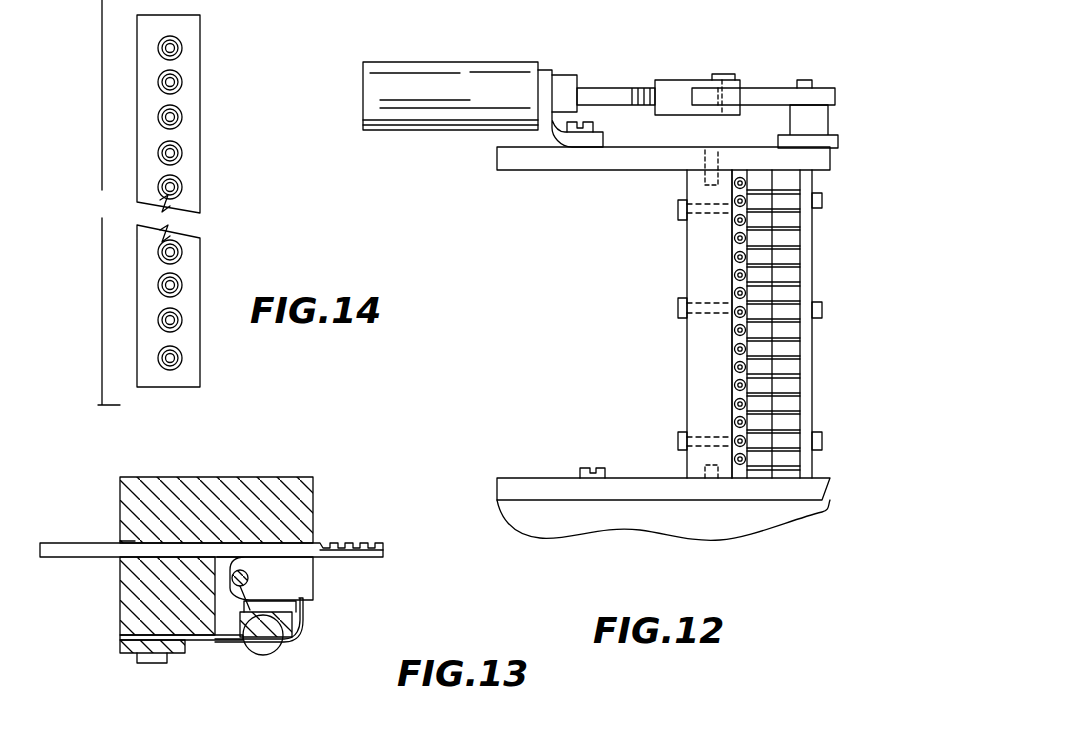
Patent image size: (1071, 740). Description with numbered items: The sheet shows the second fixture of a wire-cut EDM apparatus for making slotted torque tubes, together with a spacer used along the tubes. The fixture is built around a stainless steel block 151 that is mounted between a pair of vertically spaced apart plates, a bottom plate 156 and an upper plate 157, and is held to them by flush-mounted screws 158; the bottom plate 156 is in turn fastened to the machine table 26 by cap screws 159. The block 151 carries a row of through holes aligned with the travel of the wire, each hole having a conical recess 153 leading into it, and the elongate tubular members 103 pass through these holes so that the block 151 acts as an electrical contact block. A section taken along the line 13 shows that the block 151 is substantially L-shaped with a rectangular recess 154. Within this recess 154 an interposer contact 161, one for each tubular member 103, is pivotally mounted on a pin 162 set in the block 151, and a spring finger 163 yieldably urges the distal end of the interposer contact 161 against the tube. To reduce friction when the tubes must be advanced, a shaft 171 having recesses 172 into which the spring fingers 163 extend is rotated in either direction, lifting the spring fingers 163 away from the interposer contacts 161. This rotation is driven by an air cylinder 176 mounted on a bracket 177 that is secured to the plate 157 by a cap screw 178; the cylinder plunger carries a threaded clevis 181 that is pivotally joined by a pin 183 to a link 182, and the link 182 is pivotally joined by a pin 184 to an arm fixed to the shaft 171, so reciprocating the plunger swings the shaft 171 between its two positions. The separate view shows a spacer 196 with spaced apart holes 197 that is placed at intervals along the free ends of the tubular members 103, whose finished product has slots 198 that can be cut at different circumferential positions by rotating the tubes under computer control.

In FIG. 12, the section line 13— 13 is at (645, 280).
In FIG. 12, the table 26 is at (545, 525).
In FIG. 12, the tubular members 103 is at (735, 340).
In FIG. 13, the tubular members 103 is at (95, 550).
In FIG. 14, the tubular members 103 is at (175, 153).
In FIG. 12, the block 151 is at (695, 400).
In FIG. 13, the block 151 is at (125, 490).
In FIG. 13, the conical recess 153 is at (120, 541).
In FIG. 13, the recess 154 is at (230, 635).
In FIG. 12, the bottom plate 156 is at (512, 478).
In FIG. 12, the plate 157 is at (530, 160).
In FIG. 12, the flush-mounted screws 158 is at (690, 160).
In FIG. 12, the cap screws 159 is at (600, 476).
In FIG. 12, the interposer contact 161 is at (745, 376).
In FIG. 13, the interposer contact 161 is at (296, 585).
In FIG. 13, the pin 162 is at (258, 652).
In FIG. 12, the spring finger 163 is at (790, 392).
In FIG. 13, the spring finger 163 is at (300, 645).
In FIG. 13, the shaft 171 is at (285, 625).
In FIG. 13, the recesses 172 is at (270, 655).
In FIG. 12, the air cylinder 176 is at (474, 80).
In FIG. 12, the bracket 177 is at (542, 82).
In FIG. 12, the cap screw 178 is at (585, 137).
In FIG. 12, the clevis 181 is at (668, 92).
In FIG. 12, the link 182 is at (765, 85).
In FIG. 12, the pin 183 is at (712, 75).
In FIG. 12, the pin 184 is at (805, 82).
In FIG. 14, the spacers 196 is at (192, 190).
In FIG. 14, the holes 197 is at (175, 117).
In FIG. 13, the slots 198 is at (350, 545).